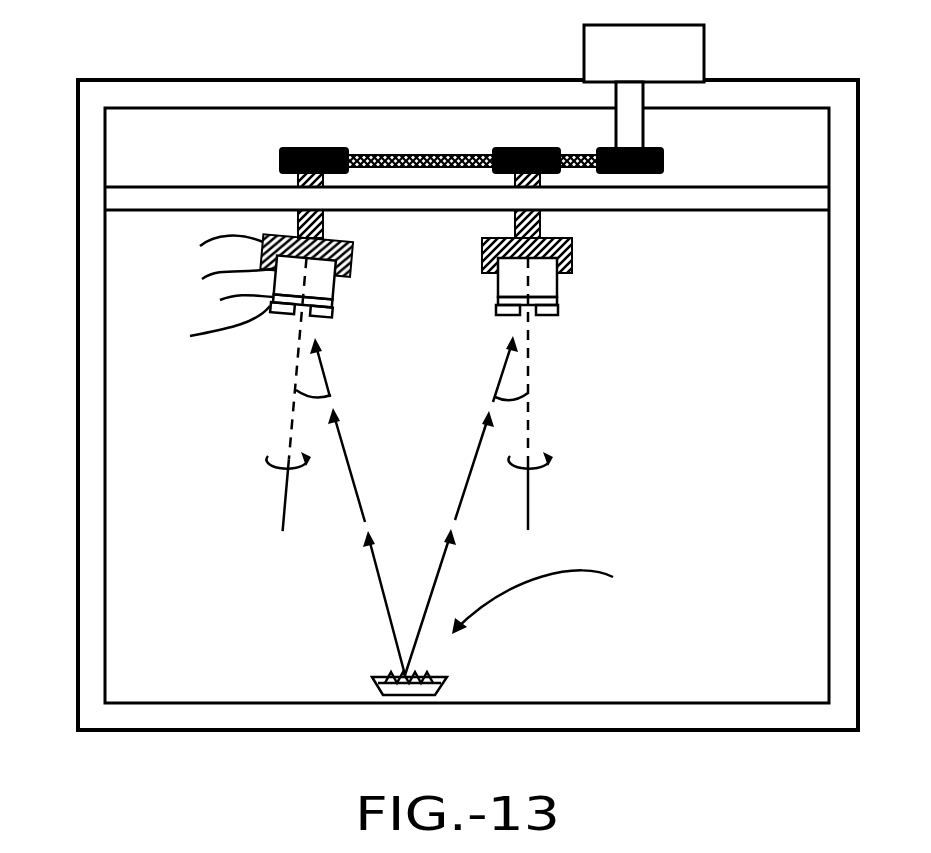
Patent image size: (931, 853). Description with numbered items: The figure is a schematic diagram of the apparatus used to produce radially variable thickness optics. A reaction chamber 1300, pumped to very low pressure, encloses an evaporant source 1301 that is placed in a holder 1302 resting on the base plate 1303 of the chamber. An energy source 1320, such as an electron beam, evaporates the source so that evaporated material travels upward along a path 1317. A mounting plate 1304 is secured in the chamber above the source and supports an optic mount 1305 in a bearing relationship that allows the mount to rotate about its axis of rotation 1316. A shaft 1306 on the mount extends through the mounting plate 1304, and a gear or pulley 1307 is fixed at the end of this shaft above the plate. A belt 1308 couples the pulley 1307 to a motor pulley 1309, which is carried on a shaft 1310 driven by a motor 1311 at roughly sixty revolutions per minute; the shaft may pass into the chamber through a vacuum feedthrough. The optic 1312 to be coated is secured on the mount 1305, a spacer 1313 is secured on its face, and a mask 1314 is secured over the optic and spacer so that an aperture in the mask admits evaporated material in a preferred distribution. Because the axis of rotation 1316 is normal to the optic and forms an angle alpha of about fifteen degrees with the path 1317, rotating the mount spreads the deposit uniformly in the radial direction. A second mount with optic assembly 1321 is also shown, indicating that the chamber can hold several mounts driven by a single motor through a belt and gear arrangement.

The reaction chamber 1300 is at (78, 153).
The evaporant source 1301 is at (420, 660).
The holder 1302 is at (372, 678).
The base plate 1303 is at (688, 703).
The mounting plate 1304 is at (143, 186).
The optic mount 1305 is at (573, 240).
The shaft 1306 is at (513, 220).
The gear or pulley 1307 is at (438, 150).
The belt 1308 is at (580, 150).
The motor pulley 1309 is at (660, 148).
The shaft 1310 is at (643, 133).
The motor 1311 is at (704, 42).
The optic 1312 is at (567, 270).
The spacer 1313 is at (558, 297).
The mask 1314 is at (558, 313).
The axis of rotation 1316 is at (528, 515).
The path of the evaporated source 1317 is at (478, 458).
The energy source 1320 is at (571, 577).
The second mount with optic assembly 1321 is at (257, 345).